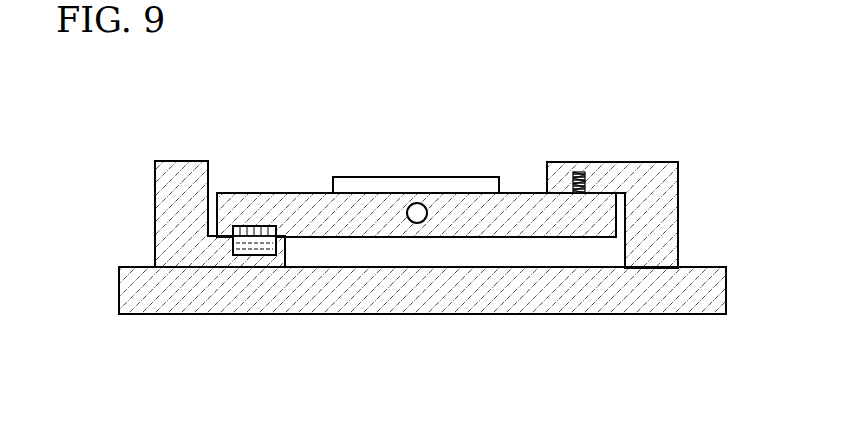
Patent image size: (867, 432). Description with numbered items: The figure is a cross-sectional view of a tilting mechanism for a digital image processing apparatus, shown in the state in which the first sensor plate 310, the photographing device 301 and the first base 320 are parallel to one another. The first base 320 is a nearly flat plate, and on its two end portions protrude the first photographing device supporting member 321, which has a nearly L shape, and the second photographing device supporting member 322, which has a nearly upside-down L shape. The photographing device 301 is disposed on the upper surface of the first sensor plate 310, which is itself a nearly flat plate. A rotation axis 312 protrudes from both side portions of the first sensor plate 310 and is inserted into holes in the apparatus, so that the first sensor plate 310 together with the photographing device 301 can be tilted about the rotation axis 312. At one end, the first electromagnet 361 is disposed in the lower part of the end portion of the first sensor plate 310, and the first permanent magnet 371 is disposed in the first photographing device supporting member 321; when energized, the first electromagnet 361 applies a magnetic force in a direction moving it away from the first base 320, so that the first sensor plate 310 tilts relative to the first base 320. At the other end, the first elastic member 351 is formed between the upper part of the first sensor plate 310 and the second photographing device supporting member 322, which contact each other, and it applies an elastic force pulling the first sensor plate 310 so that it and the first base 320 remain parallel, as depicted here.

The photographing device 301 is at (400, 184).
The first sensor plate 310 is at (300, 203).
The rotation axis 312 is at (417, 217).
The first base 320 is at (135, 277).
The first photographing device supporting member 321 is at (175, 172).
The second photographing device supporting member 322 is at (647, 173).
The first elastic member 351 is at (579, 172).
The first electromagnet 361 is at (255, 254).
The first permanent magnet 371 is at (261, 226).